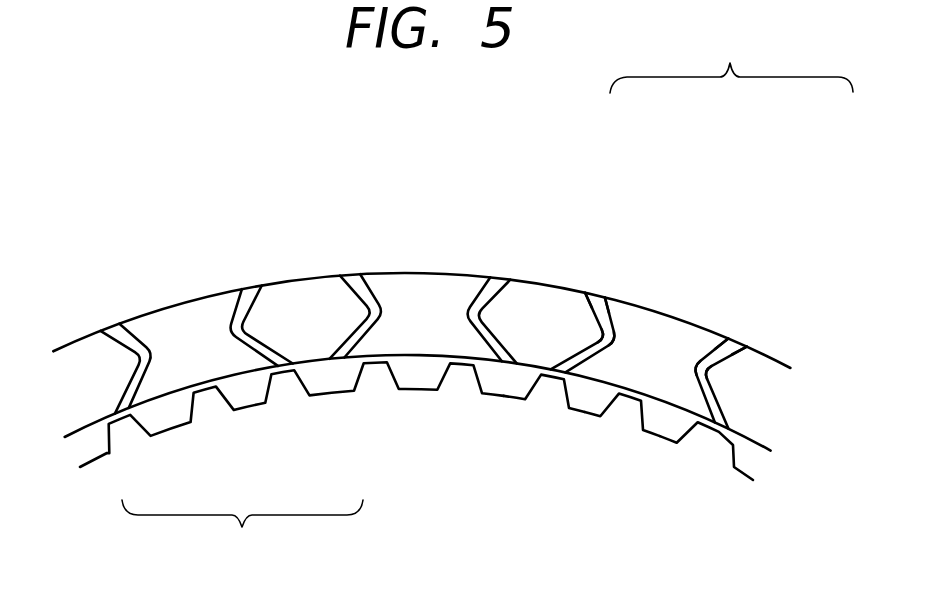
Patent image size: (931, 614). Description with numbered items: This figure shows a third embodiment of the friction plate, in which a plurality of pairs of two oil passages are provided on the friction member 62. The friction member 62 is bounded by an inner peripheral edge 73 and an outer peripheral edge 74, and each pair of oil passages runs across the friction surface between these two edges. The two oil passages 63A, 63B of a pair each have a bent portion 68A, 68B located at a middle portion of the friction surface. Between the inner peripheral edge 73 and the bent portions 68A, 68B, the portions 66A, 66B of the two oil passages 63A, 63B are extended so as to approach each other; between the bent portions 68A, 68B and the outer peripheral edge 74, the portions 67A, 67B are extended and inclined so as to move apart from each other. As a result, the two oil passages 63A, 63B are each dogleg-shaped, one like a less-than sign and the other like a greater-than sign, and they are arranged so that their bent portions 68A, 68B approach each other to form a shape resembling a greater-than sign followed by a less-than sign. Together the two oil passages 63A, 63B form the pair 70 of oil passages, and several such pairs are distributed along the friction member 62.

The friction member 62 is at (421, 338).
The oil passage 63A is at (253, 357).
The oil passage 63B is at (147, 383).
The portion 66A is at (695, 383).
The portion 66B is at (590, 367).
The portion 67A is at (745, 363).
The portion 67B is at (600, 297).
The bent portion 68A is at (690, 360).
The bent portion 68B is at (620, 347).
The pair of oil passages 70 is at (487, 296).
The inner peripheral edge 73 is at (420, 357).
The outer peripheral edge 74 is at (420, 273).